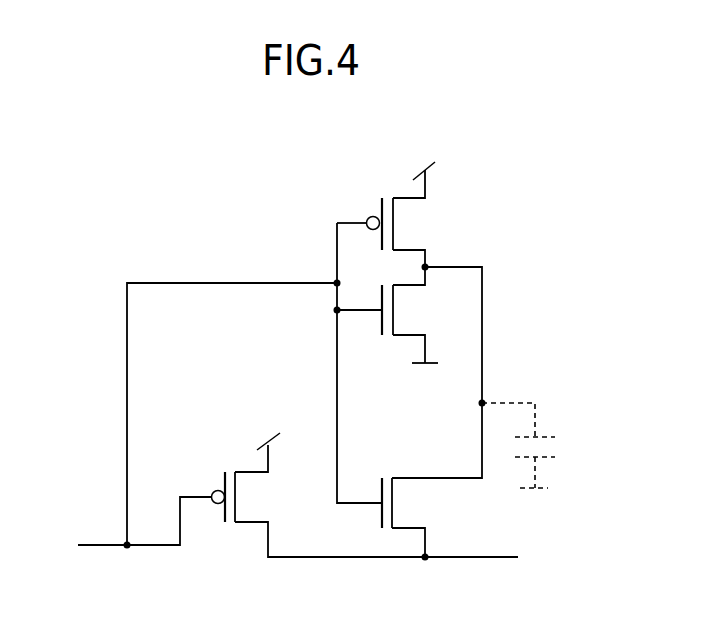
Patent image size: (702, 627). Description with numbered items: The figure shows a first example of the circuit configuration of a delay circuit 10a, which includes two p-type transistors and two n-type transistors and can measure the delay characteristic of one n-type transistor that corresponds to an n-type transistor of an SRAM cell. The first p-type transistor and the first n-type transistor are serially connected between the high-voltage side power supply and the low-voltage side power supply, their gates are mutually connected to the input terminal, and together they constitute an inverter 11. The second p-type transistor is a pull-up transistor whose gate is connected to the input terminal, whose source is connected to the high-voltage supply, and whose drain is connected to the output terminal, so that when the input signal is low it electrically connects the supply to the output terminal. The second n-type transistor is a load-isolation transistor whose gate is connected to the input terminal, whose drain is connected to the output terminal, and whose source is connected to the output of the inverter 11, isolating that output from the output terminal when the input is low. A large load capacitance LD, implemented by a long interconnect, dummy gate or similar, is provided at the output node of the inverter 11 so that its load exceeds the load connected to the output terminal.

The delay circuit 10a is at (145, 220).
The inverter 11 is at (347, 199).
The load capacitance LD is at (542, 435).